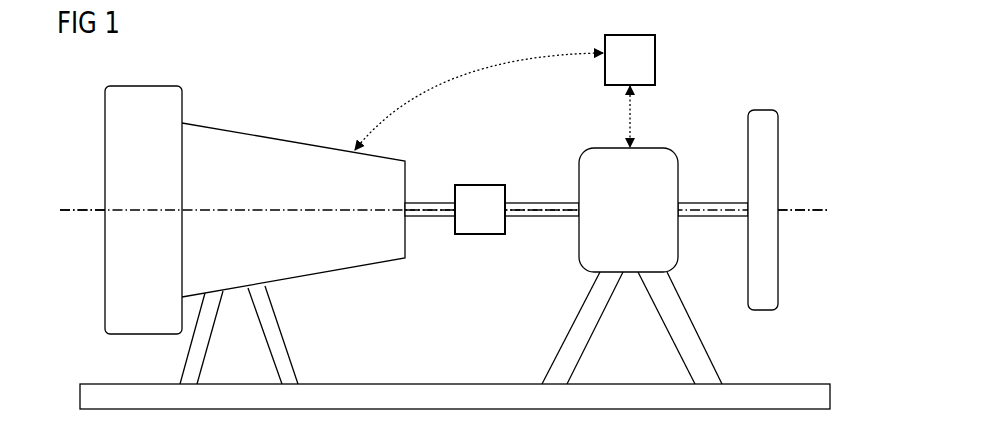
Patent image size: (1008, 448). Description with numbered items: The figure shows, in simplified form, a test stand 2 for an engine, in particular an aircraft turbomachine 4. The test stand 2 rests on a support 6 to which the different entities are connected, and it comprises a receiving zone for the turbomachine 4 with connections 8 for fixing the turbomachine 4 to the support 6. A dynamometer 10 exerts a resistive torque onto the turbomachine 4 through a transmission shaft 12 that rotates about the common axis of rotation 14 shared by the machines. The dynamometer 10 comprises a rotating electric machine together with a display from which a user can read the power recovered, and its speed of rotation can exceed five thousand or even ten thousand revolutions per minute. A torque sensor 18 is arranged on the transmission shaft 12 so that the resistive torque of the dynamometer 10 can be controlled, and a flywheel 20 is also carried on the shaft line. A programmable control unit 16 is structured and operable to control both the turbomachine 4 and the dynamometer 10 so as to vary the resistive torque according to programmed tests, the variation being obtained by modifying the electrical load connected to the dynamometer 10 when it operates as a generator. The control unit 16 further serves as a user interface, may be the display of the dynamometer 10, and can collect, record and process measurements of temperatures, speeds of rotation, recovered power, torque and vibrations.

The test stand 2 is at (793, 76).
The turbomachine 4 is at (258, 148).
The support 6 is at (430, 384).
The connections 8 is at (282, 335).
The dynamometer 10 is at (590, 165).
The transmission shaft 12 is at (435, 218).
The axis of rotation 14 is at (535, 210).
The control unit 16 is at (655, 55).
The torque sensor 18 is at (485, 197).
The flywheel 20 is at (758, 135).